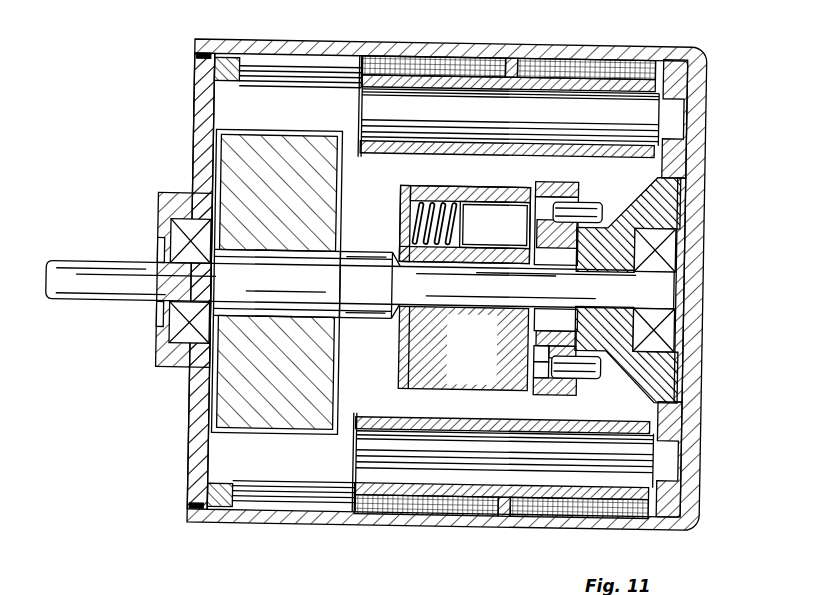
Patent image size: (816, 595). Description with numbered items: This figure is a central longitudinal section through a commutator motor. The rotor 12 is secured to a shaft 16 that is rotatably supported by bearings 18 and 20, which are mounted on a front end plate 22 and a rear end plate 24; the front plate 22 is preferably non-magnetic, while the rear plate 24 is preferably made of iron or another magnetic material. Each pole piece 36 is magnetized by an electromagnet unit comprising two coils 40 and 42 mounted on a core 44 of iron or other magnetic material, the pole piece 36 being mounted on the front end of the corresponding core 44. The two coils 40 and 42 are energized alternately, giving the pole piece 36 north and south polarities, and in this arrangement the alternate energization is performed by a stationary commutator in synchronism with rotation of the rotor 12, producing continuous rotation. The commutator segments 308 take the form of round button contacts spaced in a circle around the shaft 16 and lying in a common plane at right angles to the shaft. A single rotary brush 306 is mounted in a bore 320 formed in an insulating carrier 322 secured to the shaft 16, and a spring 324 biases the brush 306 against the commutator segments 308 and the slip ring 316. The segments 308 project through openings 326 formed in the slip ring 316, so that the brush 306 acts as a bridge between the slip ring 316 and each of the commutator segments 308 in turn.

The rotor 12 is at (243, 370).
The shaft 16 is at (96, 301).
The bearing 18 is at (176, 328).
The bearing 20 is at (706, 345).
The front end plate 22 is at (197, 413).
The rear end plate 24 is at (684, 435).
The pole piece 36 is at (296, 86).
The coil 40 is at (588, 66).
The coil 42 is at (441, 68).
The core 44 is at (506, 113).
The brush 306 is at (486, 225).
The commutator segment 308 is at (552, 362).
The slip ring 316 is at (535, 328).
The bore 320 is at (488, 258).
The insulating carrier 322 is at (414, 368).
The spring 324 is at (413, 222).
The opening 326 is at (539, 345).